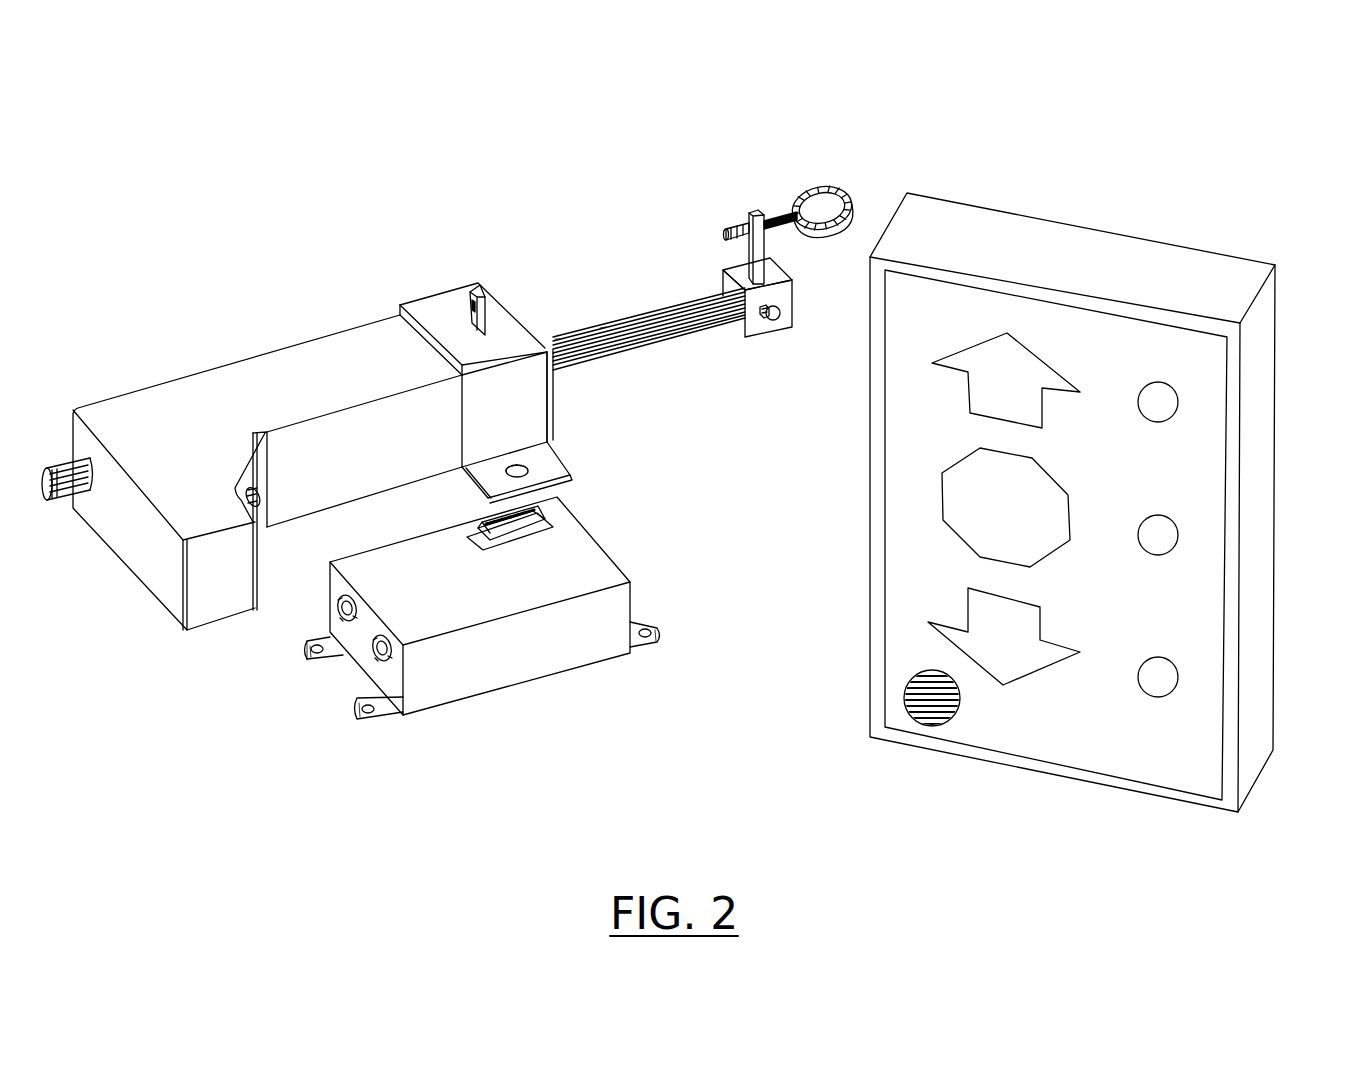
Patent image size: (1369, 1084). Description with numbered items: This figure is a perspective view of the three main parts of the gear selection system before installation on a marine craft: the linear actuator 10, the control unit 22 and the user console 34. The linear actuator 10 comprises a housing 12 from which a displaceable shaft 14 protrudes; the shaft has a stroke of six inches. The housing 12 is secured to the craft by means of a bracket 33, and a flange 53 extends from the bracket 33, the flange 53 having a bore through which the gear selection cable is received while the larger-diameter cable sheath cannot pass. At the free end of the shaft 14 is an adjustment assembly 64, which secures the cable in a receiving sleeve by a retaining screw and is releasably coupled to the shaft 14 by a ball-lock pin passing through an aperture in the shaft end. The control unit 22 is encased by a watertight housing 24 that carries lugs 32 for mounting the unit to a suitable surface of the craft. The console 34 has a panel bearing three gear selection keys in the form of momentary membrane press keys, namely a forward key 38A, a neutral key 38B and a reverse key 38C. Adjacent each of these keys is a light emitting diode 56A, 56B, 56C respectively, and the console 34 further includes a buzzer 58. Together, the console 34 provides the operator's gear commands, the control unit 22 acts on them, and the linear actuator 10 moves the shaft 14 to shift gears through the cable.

The linear actuator 10 is at (297, 411).
The housing 12 is at (157, 417).
The displaceable shaft 14 is at (645, 315).
The control unit 22 is at (514, 665).
The watertight housing 24 is at (477, 662).
The lugs 32 is at (645, 623).
The bracket 33 is at (550, 472).
The console 34 is at (1069, 436).
The forward key 38A is at (1023, 362).
The neutral key 38B is at (1020, 483).
The reverse key 38C is at (1012, 613).
The flange 53 is at (475, 302).
The light emitting diode 56A is at (1150, 392).
The light emitting diode 56B is at (1150, 528).
The light emitting diode 56C is at (1150, 670).
The buzzer 58 is at (913, 697).
The adjustment assembly 64 is at (781, 352).